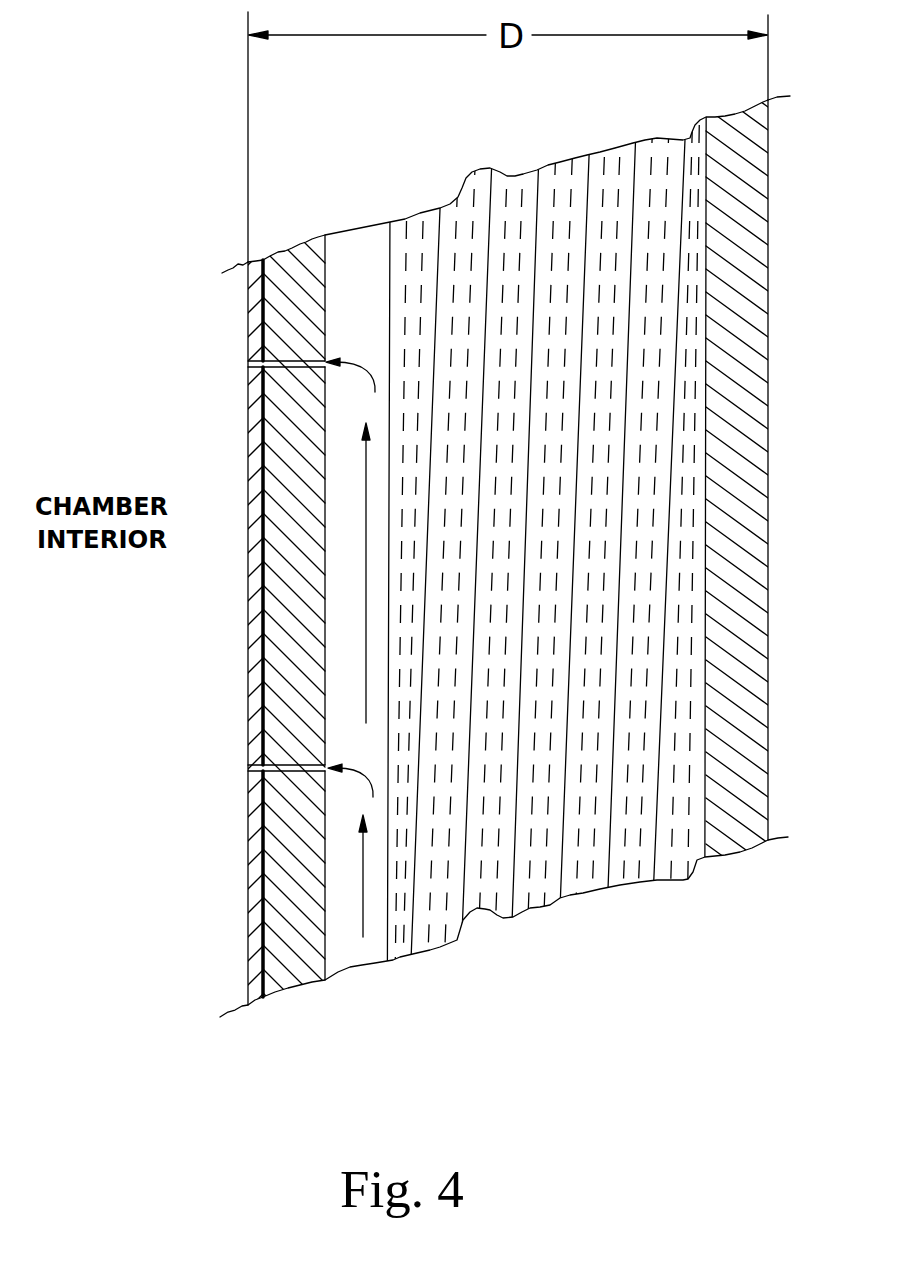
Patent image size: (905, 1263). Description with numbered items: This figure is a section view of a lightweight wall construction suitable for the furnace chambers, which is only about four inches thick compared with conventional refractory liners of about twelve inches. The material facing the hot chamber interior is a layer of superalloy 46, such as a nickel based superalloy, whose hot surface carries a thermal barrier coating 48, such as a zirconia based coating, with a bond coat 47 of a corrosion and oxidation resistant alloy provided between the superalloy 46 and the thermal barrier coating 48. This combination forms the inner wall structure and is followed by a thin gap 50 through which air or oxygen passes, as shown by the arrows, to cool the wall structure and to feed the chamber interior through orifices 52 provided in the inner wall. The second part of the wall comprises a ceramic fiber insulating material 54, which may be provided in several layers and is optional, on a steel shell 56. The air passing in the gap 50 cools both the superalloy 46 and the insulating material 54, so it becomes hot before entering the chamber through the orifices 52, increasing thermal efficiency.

The superalloy layer 46 is at (285, 973).
The bond coat 47 is at (262, 258).
The thermal barrier coating 48 is at (255, 870).
The gap 50 is at (353, 243).
The orifices 52 is at (248, 362).
The ceramic fiber insulating material 54 is at (553, 903).
The steel shell 56 is at (737, 845).